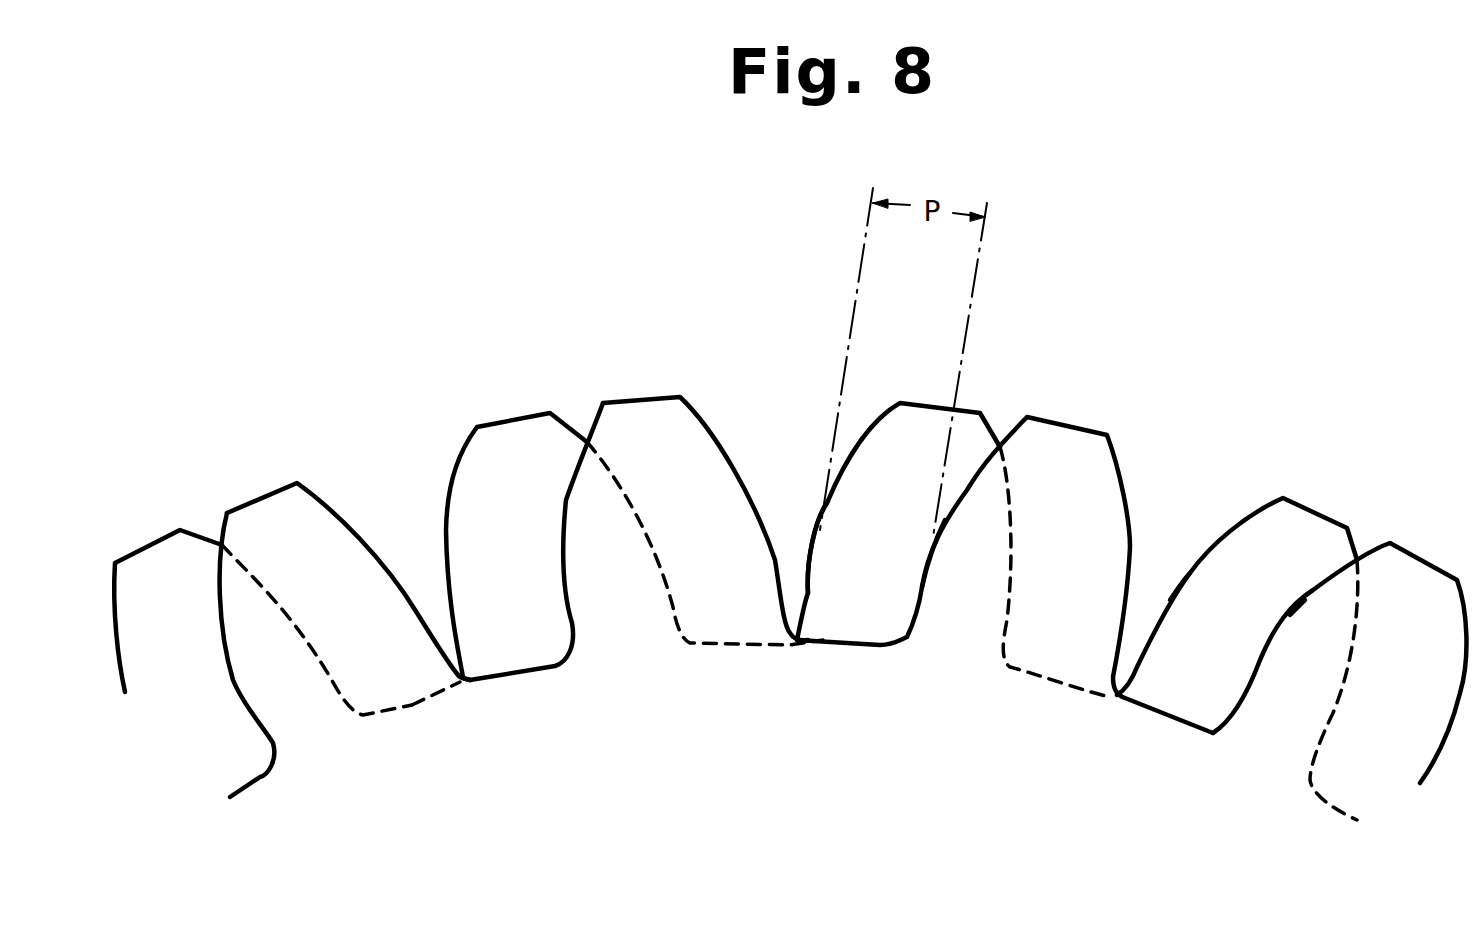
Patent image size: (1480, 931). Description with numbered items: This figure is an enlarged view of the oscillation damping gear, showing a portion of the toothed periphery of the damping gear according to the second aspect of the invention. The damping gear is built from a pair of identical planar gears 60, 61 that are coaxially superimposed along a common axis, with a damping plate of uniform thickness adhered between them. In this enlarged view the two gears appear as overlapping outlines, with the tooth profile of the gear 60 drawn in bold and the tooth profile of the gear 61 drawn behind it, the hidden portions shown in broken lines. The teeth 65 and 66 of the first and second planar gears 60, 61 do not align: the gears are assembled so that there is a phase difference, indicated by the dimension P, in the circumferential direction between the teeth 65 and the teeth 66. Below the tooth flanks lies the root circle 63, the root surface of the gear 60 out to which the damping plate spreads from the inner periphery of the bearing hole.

The planar gear 60 is at (320, 493).
The planar gear 61 is at (515, 416).
The root circle 63 is at (410, 705).
The teeth 65 is at (927, 567).
The teeth 66 is at (817, 547).